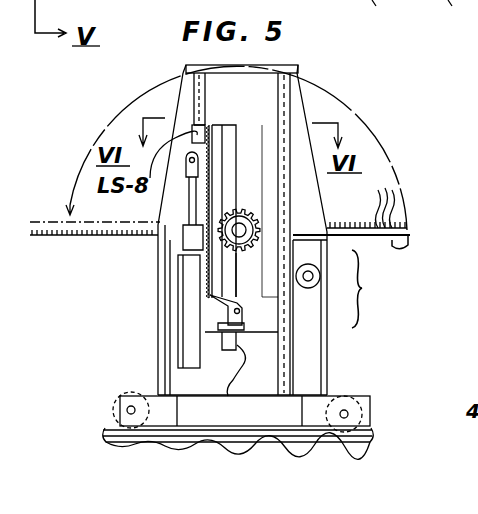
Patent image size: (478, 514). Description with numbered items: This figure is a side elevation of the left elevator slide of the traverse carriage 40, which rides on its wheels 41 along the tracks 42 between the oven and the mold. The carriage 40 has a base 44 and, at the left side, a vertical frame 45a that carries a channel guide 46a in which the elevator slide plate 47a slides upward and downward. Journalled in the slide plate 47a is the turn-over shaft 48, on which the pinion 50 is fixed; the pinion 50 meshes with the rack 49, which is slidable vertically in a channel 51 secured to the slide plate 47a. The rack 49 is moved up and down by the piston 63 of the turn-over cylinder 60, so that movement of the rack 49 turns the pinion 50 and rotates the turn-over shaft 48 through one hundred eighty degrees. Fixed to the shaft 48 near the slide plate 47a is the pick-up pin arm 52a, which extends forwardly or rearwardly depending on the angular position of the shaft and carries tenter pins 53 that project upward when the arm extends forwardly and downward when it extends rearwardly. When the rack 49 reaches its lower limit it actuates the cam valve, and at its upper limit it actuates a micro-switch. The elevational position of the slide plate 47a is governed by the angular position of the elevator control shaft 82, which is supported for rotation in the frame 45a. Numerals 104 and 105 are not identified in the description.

The traverse carriage 40 is at (375, 289).
The wheels 41 is at (133, 392).
The tracks 42 is at (182, 440).
The base 44 is at (282, 434).
The vertical frame 45a is at (158, 268).
The channel guide 46a is at (198, 92).
The elevator slide plate 47a is at (260, 210).
The turn-over shaft 48 is at (240, 226).
The rack 49 is at (222, 160).
The pinion 50 is at (250, 244).
The channel 51 is at (207, 311).
The pick-up pin arm 52a is at (398, 250).
The tenter pins 53 is at (382, 198).
The turn-over cylinder 60 is at (180, 305).
The piston 63 is at (195, 197).
The elevator control shaft 82 is at (313, 276).
The conveyor 104 is at (451, 19).
The conveyor 105 is at (371, 19).